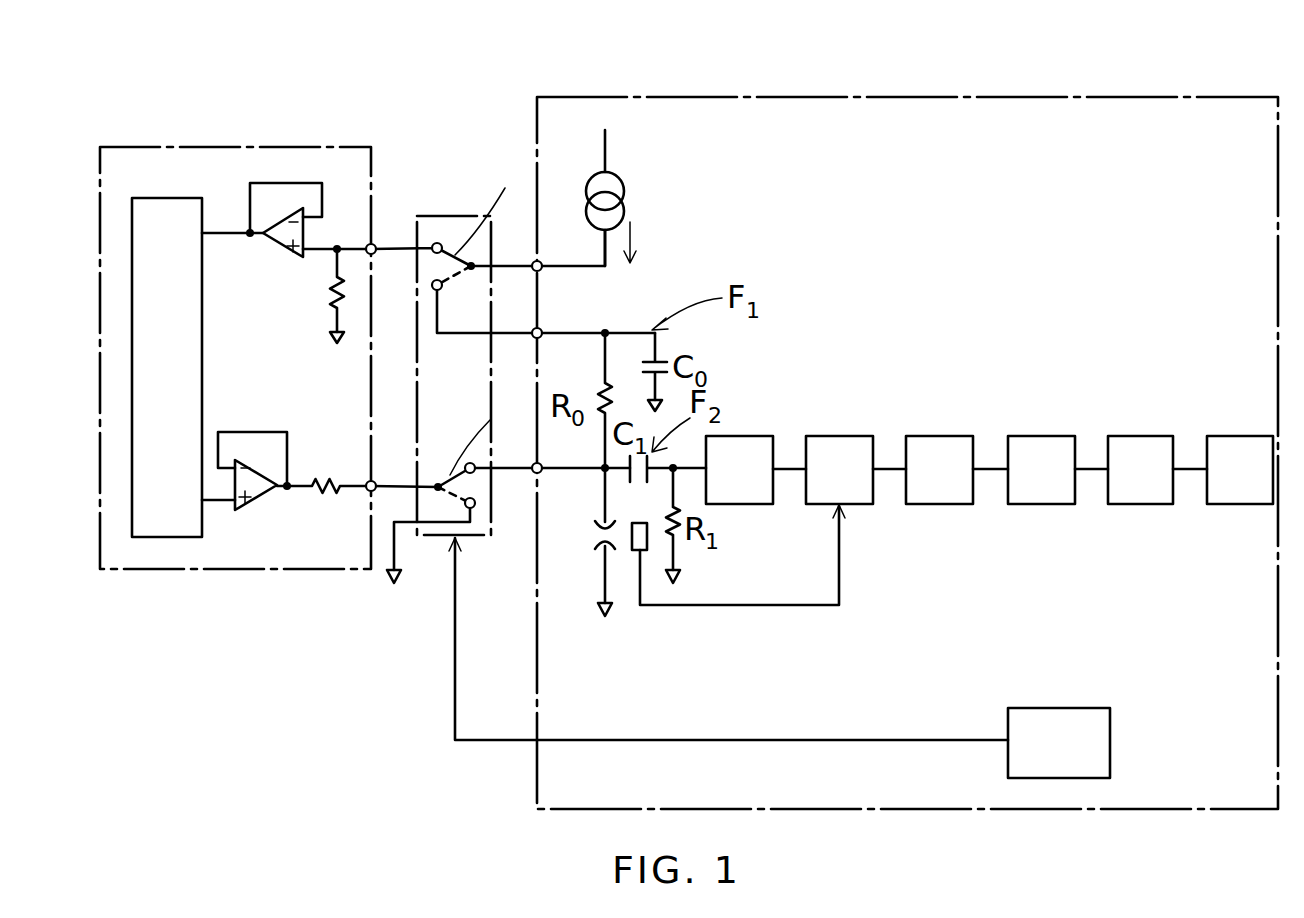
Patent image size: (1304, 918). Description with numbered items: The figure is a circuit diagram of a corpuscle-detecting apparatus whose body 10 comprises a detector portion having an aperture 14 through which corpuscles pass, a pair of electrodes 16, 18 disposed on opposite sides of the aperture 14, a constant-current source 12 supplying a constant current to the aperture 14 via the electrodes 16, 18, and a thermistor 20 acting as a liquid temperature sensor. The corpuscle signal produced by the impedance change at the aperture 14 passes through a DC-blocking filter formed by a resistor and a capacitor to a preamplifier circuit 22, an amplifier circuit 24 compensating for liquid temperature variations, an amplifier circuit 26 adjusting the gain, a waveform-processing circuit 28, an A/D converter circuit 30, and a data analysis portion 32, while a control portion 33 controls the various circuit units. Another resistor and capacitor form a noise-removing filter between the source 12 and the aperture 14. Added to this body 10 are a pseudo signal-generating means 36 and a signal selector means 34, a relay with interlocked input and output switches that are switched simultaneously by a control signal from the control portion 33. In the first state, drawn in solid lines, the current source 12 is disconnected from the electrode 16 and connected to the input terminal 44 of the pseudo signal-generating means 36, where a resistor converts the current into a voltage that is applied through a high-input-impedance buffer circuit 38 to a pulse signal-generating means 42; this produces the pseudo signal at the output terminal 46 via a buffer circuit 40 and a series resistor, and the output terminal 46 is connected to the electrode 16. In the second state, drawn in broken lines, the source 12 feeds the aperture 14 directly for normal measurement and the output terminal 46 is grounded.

The body of the apparatus 10 is at (568, 97).
The constant-current source 12 is at (622, 195).
The aperture 14 is at (658, 573).
The electrode 16 is at (600, 525).
The electrode 18 is at (603, 550).
The thermistor 20 is at (637, 558).
The preamplifier circuit 22 is at (748, 451).
The amplifier circuit for compensating for liquid temperature variations 24 is at (840, 451).
The amplifier circuit for adjusting the gain 26 is at (940, 451).
The waveform-processing circuit 28 is at (1041, 451).
The A/D converter circuit 30 is at (1141, 451).
The data analysis portion 32 is at (1240, 451).
The control portion 33 is at (779, 658).
The signal selector means 34 is at (437, 216).
The pseudo signal-generating means 36 is at (262, 147).
The buffer circuit 38 is at (247, 200).
The buffer circuit 40 is at (253, 513).
The pulse signal-generating means 42 is at (152, 198).
The input terminal 44 is at (372, 245).
The output terminal 46 is at (372, 482).